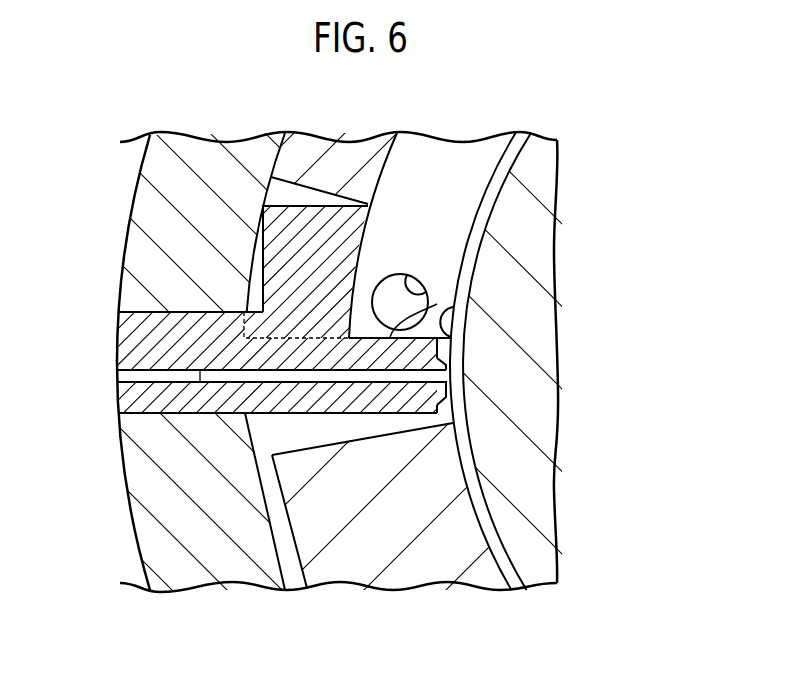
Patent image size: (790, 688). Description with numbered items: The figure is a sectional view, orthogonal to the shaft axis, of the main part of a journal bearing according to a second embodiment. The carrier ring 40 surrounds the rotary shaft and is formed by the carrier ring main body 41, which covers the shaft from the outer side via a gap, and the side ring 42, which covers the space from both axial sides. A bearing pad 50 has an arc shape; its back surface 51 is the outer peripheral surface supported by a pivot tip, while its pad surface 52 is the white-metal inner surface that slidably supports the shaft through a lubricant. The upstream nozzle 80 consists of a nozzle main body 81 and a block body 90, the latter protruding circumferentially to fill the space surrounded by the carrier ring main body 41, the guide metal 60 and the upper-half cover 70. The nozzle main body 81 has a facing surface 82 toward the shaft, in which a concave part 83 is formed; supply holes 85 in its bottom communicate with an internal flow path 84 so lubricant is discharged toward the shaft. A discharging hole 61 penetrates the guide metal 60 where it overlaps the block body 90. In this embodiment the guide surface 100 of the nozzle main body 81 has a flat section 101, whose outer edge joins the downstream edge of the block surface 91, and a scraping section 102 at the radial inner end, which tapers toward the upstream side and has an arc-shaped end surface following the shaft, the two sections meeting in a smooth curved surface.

The carrier ring 40 is at (131, 560).
The carrier ring main body 41 is at (175, 533).
The side ring 42 is at (297, 437).
The bearing pad 50 is at (458, 552).
The back surface 51 is at (296, 541).
The pad surface 52 is at (486, 508).
The guide metal 60 is at (470, 176).
The discharging hole 61 is at (426, 291).
The upper-half cover 70 is at (345, 157).
The upstream nozzle 80 is at (180, 303).
The nozzle main body 81 is at (153, 345).
The facing surface 82 is at (452, 388).
The concave part 83 is at (448, 374).
The internal flow path 84 is at (200, 382).
The supply hole 85 is at (450, 375).
The block body 90 is at (293, 240).
The block surface 91 is at (362, 240).
The guide surface 100 is at (551, 309).
The flat section 101 is at (437, 304).
The scraping section 102 is at (451, 320).